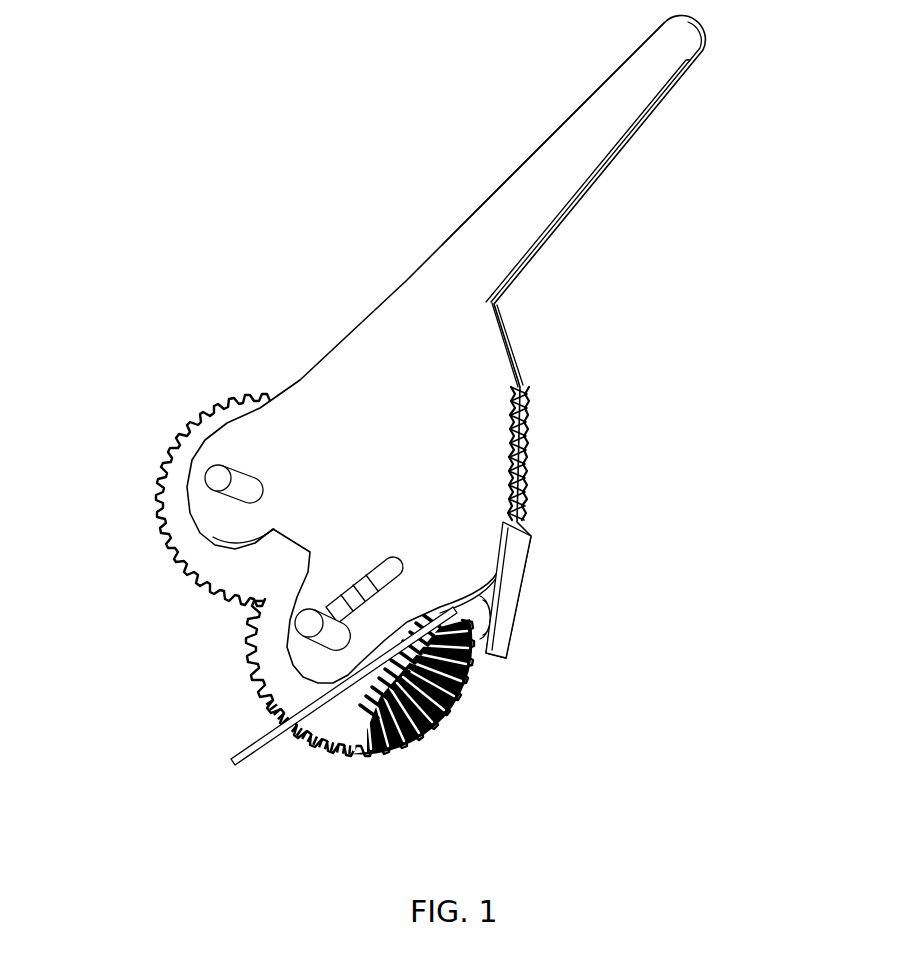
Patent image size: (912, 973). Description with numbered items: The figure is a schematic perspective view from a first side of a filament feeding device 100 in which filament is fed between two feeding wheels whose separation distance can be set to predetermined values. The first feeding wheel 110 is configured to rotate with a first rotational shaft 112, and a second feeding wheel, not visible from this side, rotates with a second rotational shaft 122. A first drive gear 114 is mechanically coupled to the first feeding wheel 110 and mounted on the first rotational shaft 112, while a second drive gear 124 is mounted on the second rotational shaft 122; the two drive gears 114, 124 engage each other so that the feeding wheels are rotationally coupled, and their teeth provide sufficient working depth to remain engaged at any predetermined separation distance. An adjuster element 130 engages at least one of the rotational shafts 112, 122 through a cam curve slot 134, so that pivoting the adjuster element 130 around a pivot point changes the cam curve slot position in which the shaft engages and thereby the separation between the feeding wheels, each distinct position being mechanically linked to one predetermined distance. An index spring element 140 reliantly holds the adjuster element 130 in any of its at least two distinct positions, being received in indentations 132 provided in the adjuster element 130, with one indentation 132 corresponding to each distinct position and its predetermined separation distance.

The filament feeding device 100 is at (294, 130).
The first feeding wheel 110 is at (455, 713).
The first rotational shaft 112 is at (292, 623).
The first drive gear 114 is at (292, 693).
The second rotational shaft 122 is at (220, 475).
The second drive gear 124 is at (243, 395).
The adjuster element 130 is at (533, 255).
The indentations 132 is at (523, 390).
The cam curve slot 134 is at (533, 531).
The index spring element 140 is at (520, 592).